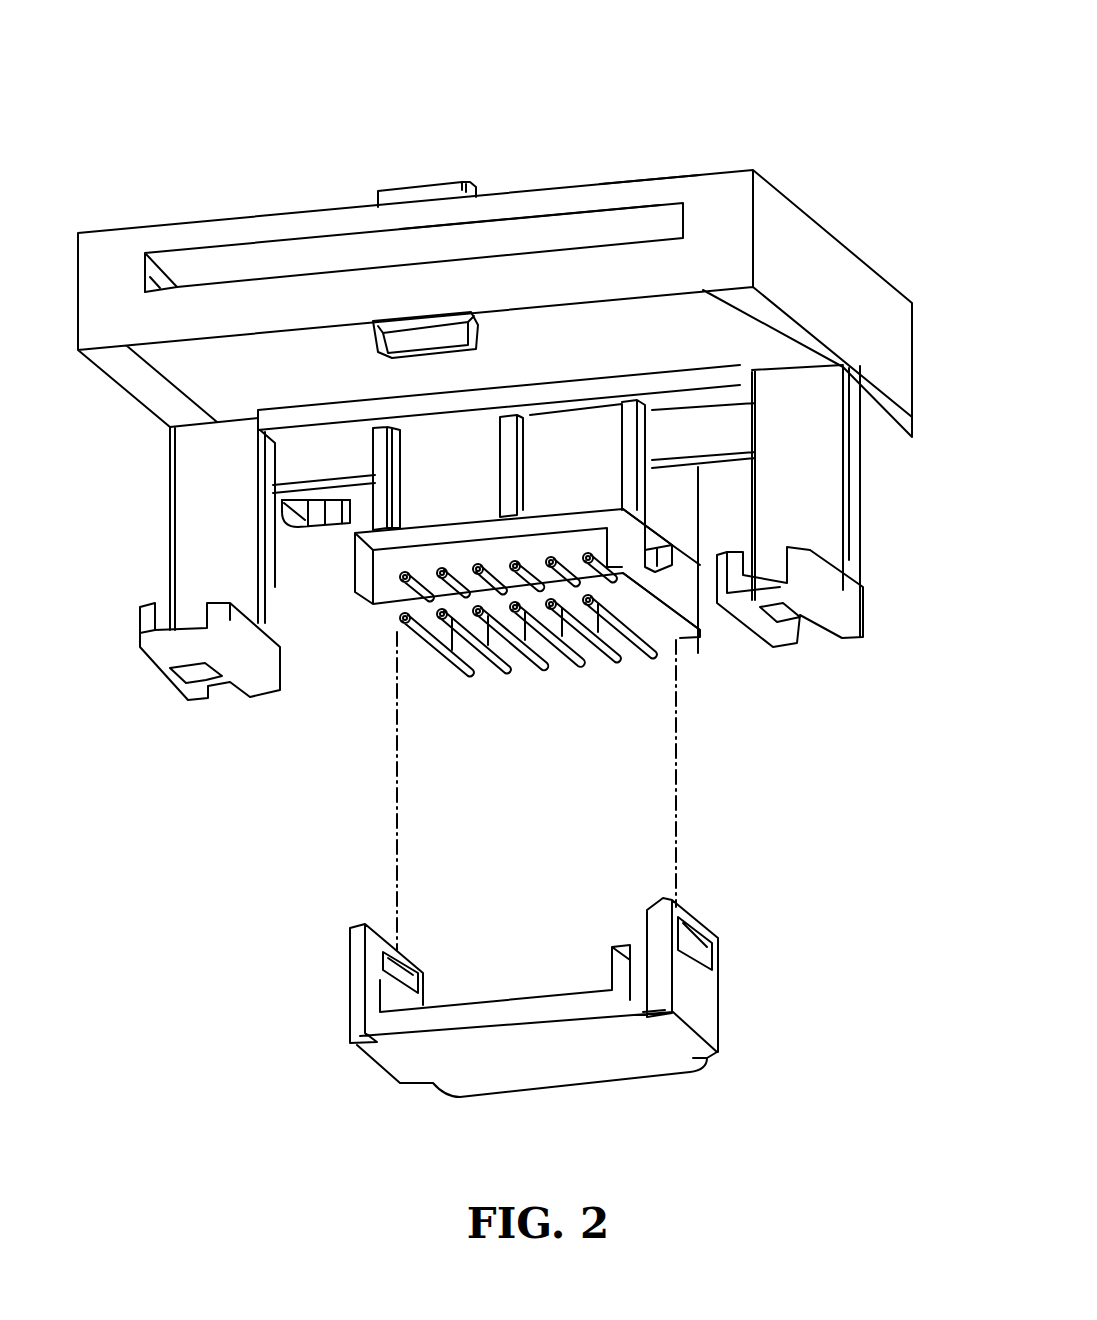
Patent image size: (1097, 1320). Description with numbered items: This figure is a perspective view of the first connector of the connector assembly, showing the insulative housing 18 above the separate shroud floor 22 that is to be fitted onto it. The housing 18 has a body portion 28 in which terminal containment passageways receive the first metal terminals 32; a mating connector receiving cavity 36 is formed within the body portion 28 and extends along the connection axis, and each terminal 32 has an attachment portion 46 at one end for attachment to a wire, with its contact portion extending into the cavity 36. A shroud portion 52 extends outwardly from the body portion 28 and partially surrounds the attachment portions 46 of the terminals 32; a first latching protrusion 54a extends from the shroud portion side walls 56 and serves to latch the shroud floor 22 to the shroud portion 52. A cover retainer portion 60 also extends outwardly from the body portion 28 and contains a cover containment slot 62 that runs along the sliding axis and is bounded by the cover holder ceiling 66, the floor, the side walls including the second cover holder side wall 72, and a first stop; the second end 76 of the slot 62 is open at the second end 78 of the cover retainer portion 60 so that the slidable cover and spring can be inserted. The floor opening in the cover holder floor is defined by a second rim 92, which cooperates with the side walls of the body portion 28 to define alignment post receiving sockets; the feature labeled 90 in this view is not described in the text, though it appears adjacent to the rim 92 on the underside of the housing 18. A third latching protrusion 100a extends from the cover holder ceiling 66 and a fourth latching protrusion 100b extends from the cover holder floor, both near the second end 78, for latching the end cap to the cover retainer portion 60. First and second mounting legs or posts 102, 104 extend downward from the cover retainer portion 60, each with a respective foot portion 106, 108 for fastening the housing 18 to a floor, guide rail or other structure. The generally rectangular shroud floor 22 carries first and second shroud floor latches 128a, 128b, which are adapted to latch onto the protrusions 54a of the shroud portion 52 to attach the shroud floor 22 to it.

The insulative housing 18 is at (808, 160).
The shroud floor 22 is at (662, 1097).
The body portion 28 is at (453, 497).
The first metal terminal 32 is at (450, 583).
The mating connector receiving chamber or cavity 36 is at (610, 590).
The attachment portion 46 is at (537, 627).
The shroud portion 52 is at (630, 532).
The first latching protrusion 54a is at (678, 585).
The shroud portion side walls 56 is at (625, 560).
The cover retainer portion 60 is at (870, 305).
The cover containment slot 62 is at (243, 256).
The cover holder ceiling 66 is at (561, 227).
The second cover holder side wall 72 is at (150, 277).
The second end of cover containment slot 76 is at (657, 220).
The second end of cover retainer portion 78 is at (713, 227).
The retention member 90 is at (310, 505).
The second rim 92 is at (342, 500).
The third latching protrusion 100a is at (450, 180).
The fourth latching protrusion 100b is at (410, 343).
The first mounting leg or post 102 is at (860, 505).
The second mounting leg or post 104 is at (170, 505).
The foot portion 106 is at (860, 635).
The foot portion 108 is at (137, 652).
The first shroud floor latch 128a is at (718, 940).
The second shroud floor latch 128b is at (350, 935).